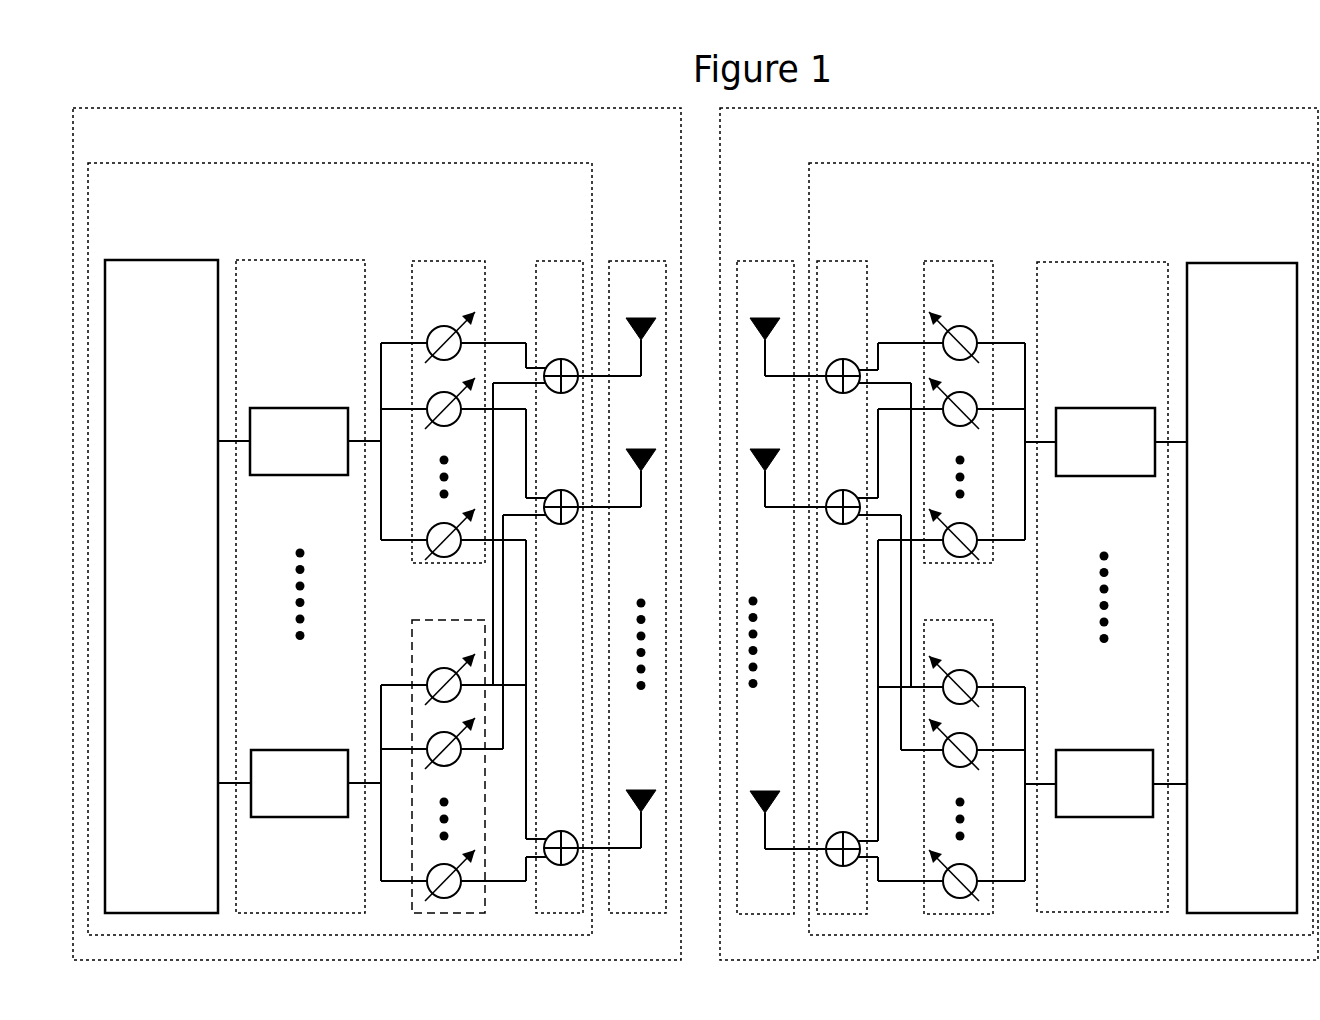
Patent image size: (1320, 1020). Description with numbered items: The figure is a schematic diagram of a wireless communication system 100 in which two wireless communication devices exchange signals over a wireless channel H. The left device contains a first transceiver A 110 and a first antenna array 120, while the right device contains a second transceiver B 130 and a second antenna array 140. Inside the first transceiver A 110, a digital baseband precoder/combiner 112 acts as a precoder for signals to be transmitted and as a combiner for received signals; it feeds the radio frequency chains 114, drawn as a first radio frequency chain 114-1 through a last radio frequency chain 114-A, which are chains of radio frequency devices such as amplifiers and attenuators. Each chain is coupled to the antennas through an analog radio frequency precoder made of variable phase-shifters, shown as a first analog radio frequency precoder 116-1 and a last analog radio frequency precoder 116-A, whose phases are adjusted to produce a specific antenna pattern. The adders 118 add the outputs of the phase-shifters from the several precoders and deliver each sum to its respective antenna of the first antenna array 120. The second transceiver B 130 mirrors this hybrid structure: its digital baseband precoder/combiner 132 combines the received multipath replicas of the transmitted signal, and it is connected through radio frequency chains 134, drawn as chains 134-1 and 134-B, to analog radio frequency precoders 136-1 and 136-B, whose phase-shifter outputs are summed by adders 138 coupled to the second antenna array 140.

The wireless communication system 100 is at (1222, 101).
The first transceiver A 110 is at (327, 196).
The digital baseband precoder/combiner 112 is at (147, 529).
The radio frequency chains 114 is at (285, 291).
The radio frequency chain 114-1 is at (276, 441).
The radio frequency chain 114-A is at (275, 782).
The analog radio frequency precoder 116-1 is at (425, 291).
The analog radio frequency precoder 116-A is at (424, 647).
The adders 118 is at (545, 291).
The first antenna array 120 is at (626, 291).
The second transceiver B 130 is at (1048, 196).
The digital baseband precoder/combiner 132 is at (1227, 529).
The radio frequency chains 134 is at (1088, 291).
The radio frequency chain 134-1 is at (1082, 441).
The radio frequency chain 134-B is at (1080, 782).
The analog radio frequency precoder 136-1 is at (934, 291).
The analog radio frequency precoder 136-B is at (933, 647).
The adders 138 is at (827, 291).
The second antenna array 140 is at (750, 291).